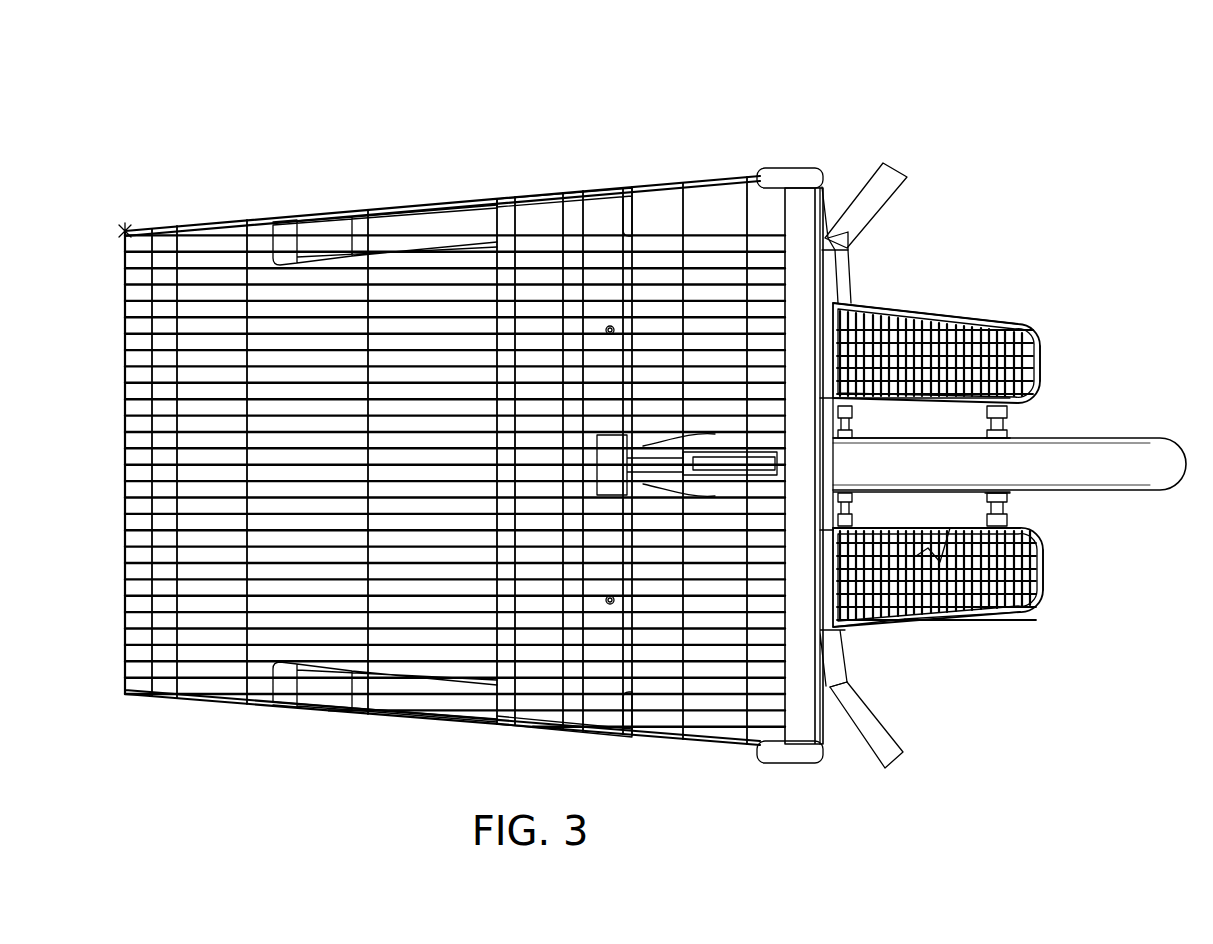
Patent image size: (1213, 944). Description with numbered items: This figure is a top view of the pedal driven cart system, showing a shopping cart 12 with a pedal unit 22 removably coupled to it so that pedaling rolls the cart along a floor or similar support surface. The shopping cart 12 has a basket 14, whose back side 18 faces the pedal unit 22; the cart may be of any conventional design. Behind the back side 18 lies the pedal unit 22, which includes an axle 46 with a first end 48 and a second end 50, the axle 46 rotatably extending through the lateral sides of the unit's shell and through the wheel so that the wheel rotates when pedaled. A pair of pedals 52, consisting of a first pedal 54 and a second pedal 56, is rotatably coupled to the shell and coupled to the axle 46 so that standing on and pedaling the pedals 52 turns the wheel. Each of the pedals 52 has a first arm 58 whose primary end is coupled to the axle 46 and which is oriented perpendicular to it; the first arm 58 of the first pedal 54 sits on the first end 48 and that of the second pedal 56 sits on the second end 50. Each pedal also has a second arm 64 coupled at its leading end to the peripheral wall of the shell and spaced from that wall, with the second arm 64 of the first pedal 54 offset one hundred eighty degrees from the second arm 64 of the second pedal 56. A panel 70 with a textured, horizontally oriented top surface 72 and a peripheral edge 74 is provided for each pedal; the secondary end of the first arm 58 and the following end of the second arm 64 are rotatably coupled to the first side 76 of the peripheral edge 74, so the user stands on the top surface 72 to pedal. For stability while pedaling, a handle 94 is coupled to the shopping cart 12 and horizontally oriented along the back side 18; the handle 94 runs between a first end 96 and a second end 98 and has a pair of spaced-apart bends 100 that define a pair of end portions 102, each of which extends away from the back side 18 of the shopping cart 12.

The shopping cart 12 is at (603, 170).
The basket 14 is at (462, 198).
The back side 18 is at (802, 284).
The pedal unit 22 is at (1052, 312).
The axle 46 is at (1010, 495).
The first end 48 is at (1027, 597).
The second end 50 is at (987, 405).
The pedals 52 is at (954, 300).
The first pedal 54 is at (1003, 612).
The second pedal 56 is at (905, 304).
The first arm 58 is at (1010, 512).
The second arm 64 is at (903, 613).
The panel 70 is at (963, 613).
The top surface 72 is at (950, 528).
The peripheral edge 74 is at (1045, 346).
The first side 76 is at (963, 528).
The handle 94 is at (822, 647).
The first end 96 is at (897, 760).
The second end 98 is at (892, 165).
The bends 100 is at (815, 248).
The end portions 102 is at (838, 230).